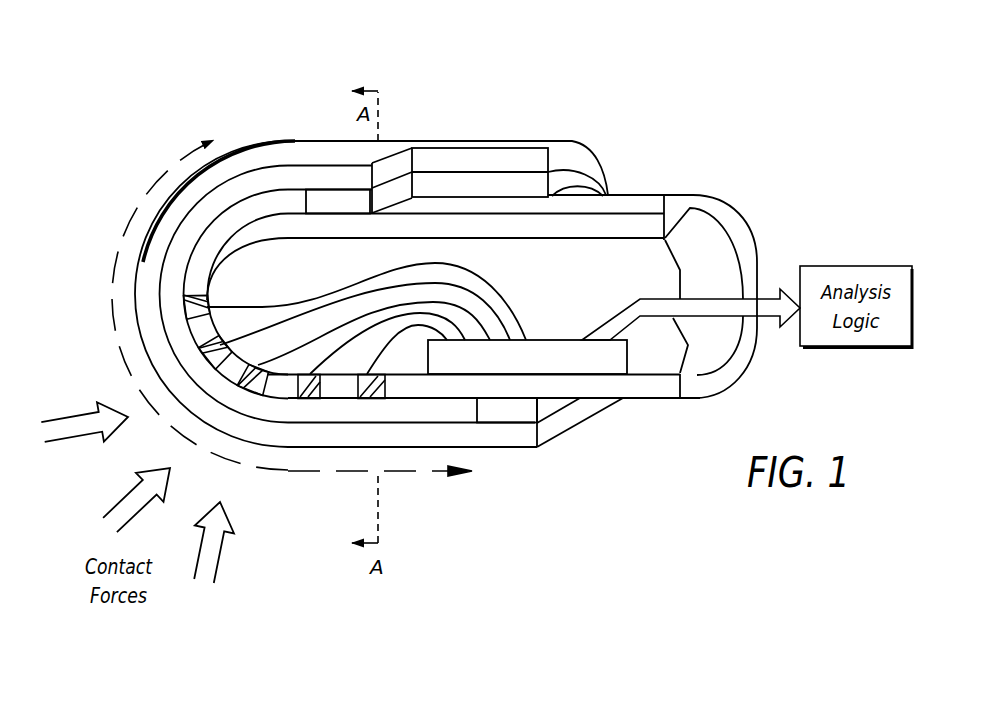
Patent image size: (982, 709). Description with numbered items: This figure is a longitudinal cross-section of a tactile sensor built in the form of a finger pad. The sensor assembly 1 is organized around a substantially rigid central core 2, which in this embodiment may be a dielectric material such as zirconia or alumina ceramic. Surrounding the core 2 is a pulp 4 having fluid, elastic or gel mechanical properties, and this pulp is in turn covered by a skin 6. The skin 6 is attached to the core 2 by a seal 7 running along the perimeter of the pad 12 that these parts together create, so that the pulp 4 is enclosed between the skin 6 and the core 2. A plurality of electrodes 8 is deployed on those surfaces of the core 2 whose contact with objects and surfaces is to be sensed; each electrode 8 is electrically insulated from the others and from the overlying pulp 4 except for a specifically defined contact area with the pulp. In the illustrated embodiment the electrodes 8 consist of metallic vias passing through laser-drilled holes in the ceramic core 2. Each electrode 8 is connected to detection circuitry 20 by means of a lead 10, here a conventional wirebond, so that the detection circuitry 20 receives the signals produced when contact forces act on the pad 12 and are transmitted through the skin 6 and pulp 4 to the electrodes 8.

The sensor assembly 1 is at (657, 93).
The central core 2 is at (610, 226).
The pulp 4 is at (172, 293).
The skin 6 is at (146, 334).
The seal 7 is at (327, 196).
The electrodes 8 is at (373, 401).
The lead 10 is at (482, 271).
The pad 12 is at (127, 238).
The detection circuitry 20 is at (545, 347).